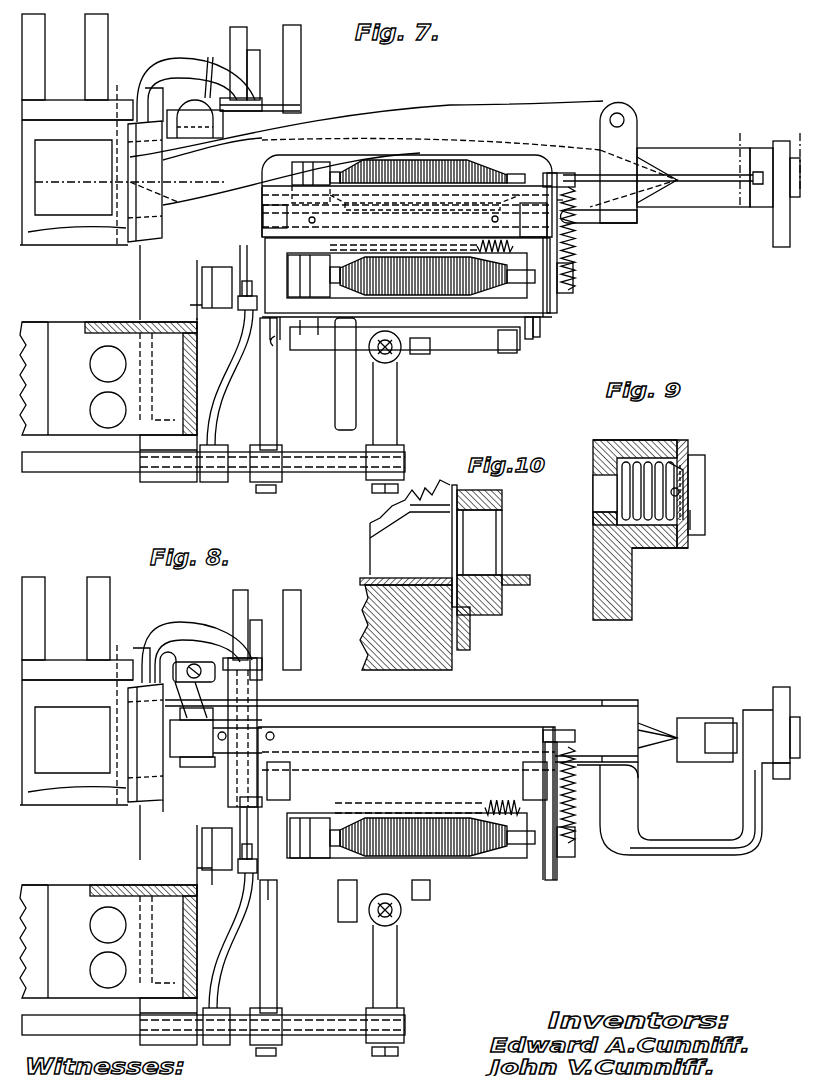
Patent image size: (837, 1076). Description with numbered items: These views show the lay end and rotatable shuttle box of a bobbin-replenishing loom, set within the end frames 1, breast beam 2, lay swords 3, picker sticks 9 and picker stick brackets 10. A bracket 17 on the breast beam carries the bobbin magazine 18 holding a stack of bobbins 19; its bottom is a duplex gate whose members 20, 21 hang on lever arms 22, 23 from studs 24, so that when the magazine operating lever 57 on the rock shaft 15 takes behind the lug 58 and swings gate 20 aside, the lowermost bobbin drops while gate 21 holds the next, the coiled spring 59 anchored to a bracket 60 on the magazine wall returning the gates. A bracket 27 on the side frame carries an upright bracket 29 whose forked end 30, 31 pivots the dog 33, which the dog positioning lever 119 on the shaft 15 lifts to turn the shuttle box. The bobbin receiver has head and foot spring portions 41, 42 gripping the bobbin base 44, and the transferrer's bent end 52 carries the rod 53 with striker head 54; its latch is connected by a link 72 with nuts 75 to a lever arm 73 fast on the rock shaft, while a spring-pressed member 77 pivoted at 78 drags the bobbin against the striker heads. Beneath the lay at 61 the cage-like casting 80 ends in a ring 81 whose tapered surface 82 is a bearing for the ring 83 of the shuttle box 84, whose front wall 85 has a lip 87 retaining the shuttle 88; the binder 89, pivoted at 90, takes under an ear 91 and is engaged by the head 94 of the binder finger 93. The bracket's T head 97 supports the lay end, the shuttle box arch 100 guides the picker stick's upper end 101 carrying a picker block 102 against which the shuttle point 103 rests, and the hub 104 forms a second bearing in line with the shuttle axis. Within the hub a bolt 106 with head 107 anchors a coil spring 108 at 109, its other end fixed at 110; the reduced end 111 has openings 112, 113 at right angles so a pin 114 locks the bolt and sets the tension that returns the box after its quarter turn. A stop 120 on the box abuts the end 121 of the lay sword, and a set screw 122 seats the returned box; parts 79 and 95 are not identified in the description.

In FIG. 7, the end frames 1 is at (142, 292).
In FIG. 8, the end frames 1 is at (145, 853).
In FIG. 7, the breast beam 2 is at (33, 322).
In FIG. 8, the breast beam 2 is at (33, 885).
In FIG. 7, the lay swords 3 is at (57, 108).
In FIG. 10, the lay swords 3 is at (378, 525).
In FIG. 8, the lay swords 3 is at (68, 672).
In FIG. 7, the picker sticks 9 is at (763, 164).
In FIG. 7, the picker stick brackets 10 is at (130, 187).
In FIG. 7, the rock shaft 15 is at (96, 472).
In FIG. 8, the rock shaft 15 is at (110, 1035).
In FIG. 7, the bracket 17 is at (192, 318).
In FIG. 8, the bracket 17 is at (192, 885).
In FIG. 7, the bobbin magazine 18 is at (325, 316).
In FIG. 8, the bobbin magazine 18 is at (325, 880).
In FIG. 7, the bobbins 19 is at (410, 168).
In FIG. 8, the bobbins 19 is at (395, 826).
In FIG. 7, the gate or shelf 20 is at (492, 346).
In FIG. 7, the gate or shelf 21 is at (514, 190).
In FIG. 8, the gate or shelf 21 is at (340, 760).
In FIG. 7, the lever arms 22 is at (557, 311).
In FIG. 8, the lever arms 22 is at (557, 880).
In FIG. 7, the lever arms 23 is at (566, 207).
In FIG. 8, the lever arms 23 is at (240, 800).
In FIG. 7, the studs 24 is at (575, 278).
In FIG. 8, the studs 24 is at (575, 846).
In FIG. 7, the bracket 27 is at (192, 303).
In FIG. 8, the bracket 27 is at (210, 878).
In FIG. 8, the upright bracket 29 is at (228, 851).
In FIG. 7, the forked upper end 30 is at (296, 34).
In FIG. 8, the forked upper end 30 is at (299, 596).
In FIG. 7, the forked upper end 31 is at (232, 35).
In FIG. 8, the forked upper end 31 is at (233, 598).
In FIG. 7, the dog 33 is at (262, 72).
In FIG. 8, the dog 33 is at (262, 638).
In FIG. 7, the head spring portion 41 is at (541, 324).
In FIG. 7, the foot spring portion 42 is at (282, 342).
In FIG. 7, the base of the bobbin 44 is at (298, 166).
In FIG. 8, the base of the bobbin 44 is at (298, 825).
In FIG. 7, the bent upper end 52 is at (338, 369).
In FIG. 7, the rod 53 is at (472, 351).
In FIG. 7, the striker head 54 is at (534, 343).
In FIG. 7, the magazine operating lever 57 is at (240, 346).
In FIG. 8, the magazine operating lever 57 is at (240, 917).
In FIG. 7, the lug or ear 58 is at (243, 311).
In FIG. 8, the lug or ear 58 is at (243, 870).
In FIG. 7, the coiled spring 59 is at (574, 252).
In FIG. 8, the coiled spring 59 is at (572, 815).
In FIG. 7, the bracket 60 is at (570, 187).
In FIG. 8, the bracket 60 is at (545, 752).
In FIG. 10, the under side of the lay 61 is at (425, 648).
In FIG. 7, the link 72 is at (398, 362).
In FIG. 8, the link 72 is at (398, 923).
In FIG. 7, the lever arm 73 is at (390, 442).
In FIG. 8, the lever arm 73 is at (390, 1003).
In FIG. 7, the nuts 75 is at (400, 349).
In FIG. 8, the nuts 75 is at (400, 913).
In FIG. 8, the member 77 is at (480, 805).
In FIG. 8, the upper end 78 is at (500, 812).
In FIG. 7, the block 79 is at (426, 351).
In FIG. 8, the block 79 is at (426, 900).
In FIG. 7, the cage-like casting 80 is at (60, 135).
In FIG. 10, the cage-like casting 80 is at (377, 560).
In FIG. 8, the cage-like casting 80 is at (64, 697).
In FIG. 7, the ring or annulus 81 is at (128, 190).
In FIG. 10, the ring or annulus 81 is at (452, 488).
In FIG. 8, the ring or annulus 81 is at (128, 752).
In FIG. 7, the tapered inner surface 82 is at (119, 90).
In FIG. 10, the tapered inner surface 82 is at (470, 630).
In FIG. 8, the tapered inner surface 82 is at (132, 663).
In FIG. 10, the ring or annulus 83 is at (495, 500).
In FIG. 8, the ring or annulus 83 is at (153, 805).
In FIG. 10, the shuttle box 84 is at (523, 586).
In FIG. 7, the front wall 85 is at (590, 225).
In FIG. 7, the lip 87 is at (262, 198).
In FIG. 7, the shuttle 88 is at (474, 150).
In FIG. 7, the binder 89 is at (375, 122).
In FIG. 8, the binder 89 is at (372, 712).
In FIG. 7, the pivot 90 is at (617, 113).
In FIG. 7, the ear 91 is at (192, 100).
In FIG. 8, the ear 91 is at (183, 768).
In FIG. 7, the binder finger 93 is at (163, 72).
In FIG. 7, the head 94 is at (262, 100).
In FIG. 8, the head 94 is at (262, 660).
In FIG. 7, the rod 95 is at (262, 117).
In FIG. 8, the rod 95 is at (262, 712).
In FIG. 7, the T head 97 is at (783, 222).
In FIG. 9, the T head 97 is at (680, 550).
In FIG. 8, the T head 97 is at (783, 780).
In FIG. 7, the arch 100 is at (683, 158).
In FIG. 9, the arch 100 is at (617, 618).
In FIG. 8, the arch 100 is at (695, 853).
In FIG. 8, the upper end of picker stick 101 is at (718, 732).
In FIG. 8, the picker block 102 is at (690, 722).
In FIG. 8, the point of the shuttle 103 is at (672, 736).
In FIG. 7, the base or hub-like portion 104 is at (763, 150).
In FIG. 9, the base or hub-like portion 104 is at (638, 449).
In FIG. 8, the base or hub-like portion 104 is at (765, 718).
In FIG. 9, the bolt 106 is at (690, 478).
In FIG. 9, the head 107 is at (703, 468).
In FIG. 9, the coil spring 108 is at (681, 449).
In FIG. 9, the spring attachment 109 is at (688, 500).
In FIG. 9, the spring attachment 110 is at (605, 520).
In FIG. 9, the reduced inner end 111 is at (595, 485).
In FIG. 9, the opening 112 is at (695, 515).
In FIG. 9, the opening 113 is at (700, 455).
In FIG. 9, the pin 114 is at (690, 495).
In FIG. 7, the dog positioning lever 119 is at (255, 394).
In FIG. 8, the dog positioning lever 119 is at (256, 956).
In FIG. 7, the stop 120 is at (192, 255).
In FIG. 8, the stop 120 is at (162, 652).
In FIG. 7, the end 121 is at (216, 69).
In FIG. 8, the end 121 is at (178, 650).
In FIG. 8, the set screw 122 is at (200, 660).